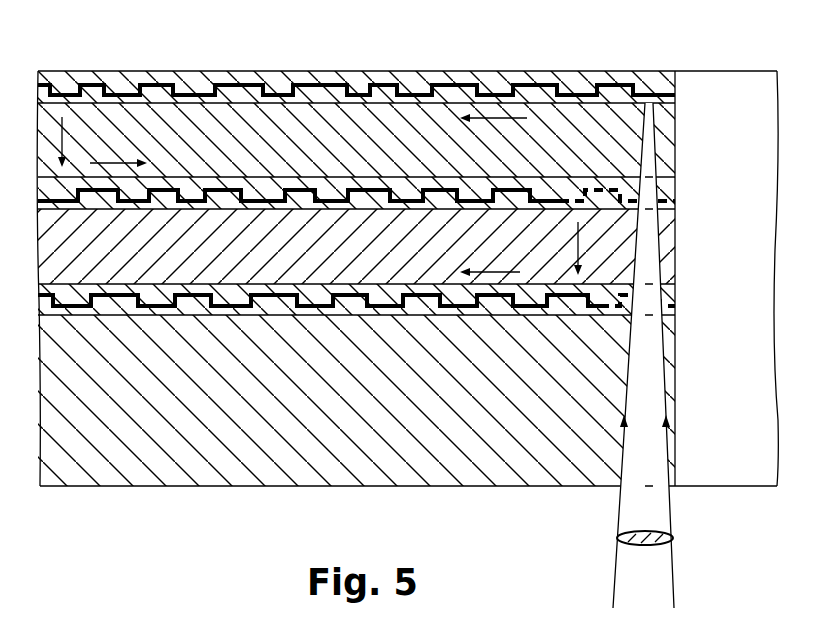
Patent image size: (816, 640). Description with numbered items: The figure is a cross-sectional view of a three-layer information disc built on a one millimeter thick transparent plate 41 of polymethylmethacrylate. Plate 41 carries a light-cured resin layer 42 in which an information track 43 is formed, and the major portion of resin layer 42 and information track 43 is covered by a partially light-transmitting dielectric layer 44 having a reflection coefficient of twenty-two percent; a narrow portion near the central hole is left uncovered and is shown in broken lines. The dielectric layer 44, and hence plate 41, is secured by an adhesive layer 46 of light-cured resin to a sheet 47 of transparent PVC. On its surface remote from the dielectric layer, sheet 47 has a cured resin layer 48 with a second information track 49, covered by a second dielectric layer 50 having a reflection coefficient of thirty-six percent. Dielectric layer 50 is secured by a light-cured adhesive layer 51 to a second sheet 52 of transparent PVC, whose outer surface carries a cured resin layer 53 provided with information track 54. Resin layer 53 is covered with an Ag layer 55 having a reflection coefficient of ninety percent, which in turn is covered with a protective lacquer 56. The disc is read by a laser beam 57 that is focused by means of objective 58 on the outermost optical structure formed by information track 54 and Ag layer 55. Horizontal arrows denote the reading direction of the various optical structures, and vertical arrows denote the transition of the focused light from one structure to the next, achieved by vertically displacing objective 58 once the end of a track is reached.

The transparent plate 41 is at (79, 425).
The light-cured resin layer 42 is at (157, 317).
The information track 43 is at (195, 300).
The partially light-transmitting dielectric layer 44 is at (247, 300).
The adhesive layer 46 is at (297, 292).
The sheet 47 is at (338, 260).
The cured resin layer 48 is at (497, 205).
The second information track 49 is at (435, 200).
The second dielectric layer 50 is at (403, 195).
The light-cured adhesive layer 51 is at (352, 185).
The second sheet 52 is at (288, 120).
The cured resin layer 53 is at (245, 100).
The information track 54 is at (188, 93).
The Ag layer 55 is at (157, 98).
The protective lacquer 56 is at (106, 80).
The laser beam 57 is at (620, 470).
The objective 58 is at (660, 534).